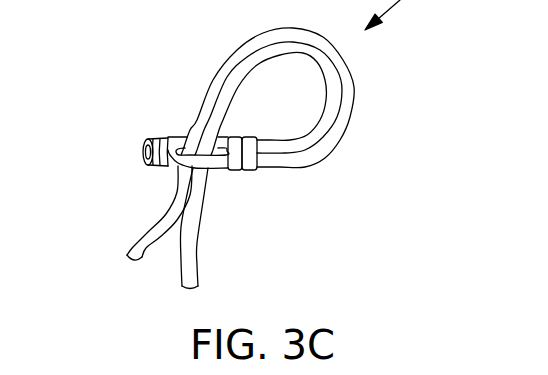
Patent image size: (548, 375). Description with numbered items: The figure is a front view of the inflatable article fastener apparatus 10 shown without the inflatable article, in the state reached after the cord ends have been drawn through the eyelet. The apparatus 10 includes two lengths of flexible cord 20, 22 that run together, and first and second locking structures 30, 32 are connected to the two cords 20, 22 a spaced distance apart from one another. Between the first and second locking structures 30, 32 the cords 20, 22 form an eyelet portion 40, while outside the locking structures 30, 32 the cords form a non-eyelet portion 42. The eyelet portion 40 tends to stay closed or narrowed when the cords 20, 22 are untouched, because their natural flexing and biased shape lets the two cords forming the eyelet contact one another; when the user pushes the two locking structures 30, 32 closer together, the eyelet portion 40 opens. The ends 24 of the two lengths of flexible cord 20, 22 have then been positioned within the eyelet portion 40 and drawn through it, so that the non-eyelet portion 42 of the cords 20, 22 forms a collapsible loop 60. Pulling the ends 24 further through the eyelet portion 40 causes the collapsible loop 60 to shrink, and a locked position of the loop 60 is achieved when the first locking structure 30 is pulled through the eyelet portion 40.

The inflatable article fastener apparatus 10 is at (450, 374).
The flexible cord 20 is at (296, 146).
The flexible cord 22 is at (303, 142).
The end 24 is at (192, 289).
The first locking structure 30 is at (238, 170).
The second locking structure 32 is at (157, 138).
The eyelet portion 40 is at (168, 182).
The non-eyelet portion 42 is at (336, 151).
The collapsible loop 60 is at (296, 146).